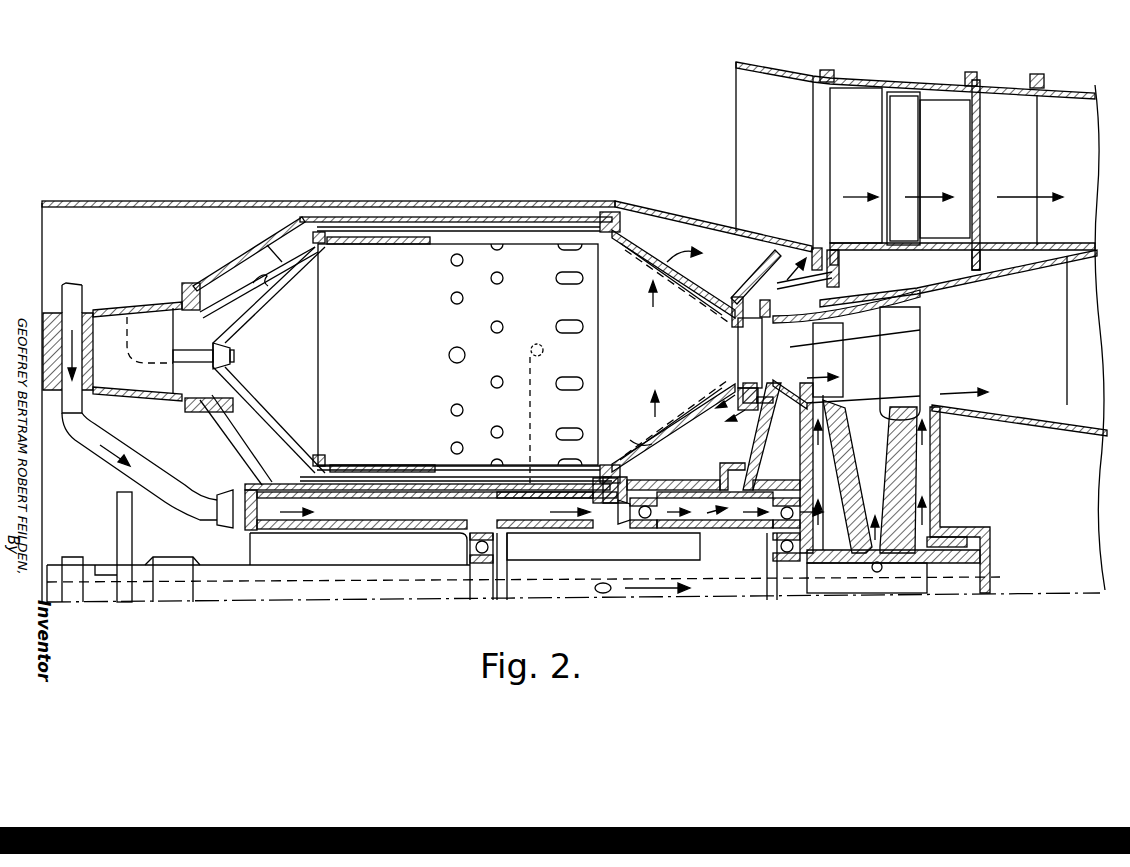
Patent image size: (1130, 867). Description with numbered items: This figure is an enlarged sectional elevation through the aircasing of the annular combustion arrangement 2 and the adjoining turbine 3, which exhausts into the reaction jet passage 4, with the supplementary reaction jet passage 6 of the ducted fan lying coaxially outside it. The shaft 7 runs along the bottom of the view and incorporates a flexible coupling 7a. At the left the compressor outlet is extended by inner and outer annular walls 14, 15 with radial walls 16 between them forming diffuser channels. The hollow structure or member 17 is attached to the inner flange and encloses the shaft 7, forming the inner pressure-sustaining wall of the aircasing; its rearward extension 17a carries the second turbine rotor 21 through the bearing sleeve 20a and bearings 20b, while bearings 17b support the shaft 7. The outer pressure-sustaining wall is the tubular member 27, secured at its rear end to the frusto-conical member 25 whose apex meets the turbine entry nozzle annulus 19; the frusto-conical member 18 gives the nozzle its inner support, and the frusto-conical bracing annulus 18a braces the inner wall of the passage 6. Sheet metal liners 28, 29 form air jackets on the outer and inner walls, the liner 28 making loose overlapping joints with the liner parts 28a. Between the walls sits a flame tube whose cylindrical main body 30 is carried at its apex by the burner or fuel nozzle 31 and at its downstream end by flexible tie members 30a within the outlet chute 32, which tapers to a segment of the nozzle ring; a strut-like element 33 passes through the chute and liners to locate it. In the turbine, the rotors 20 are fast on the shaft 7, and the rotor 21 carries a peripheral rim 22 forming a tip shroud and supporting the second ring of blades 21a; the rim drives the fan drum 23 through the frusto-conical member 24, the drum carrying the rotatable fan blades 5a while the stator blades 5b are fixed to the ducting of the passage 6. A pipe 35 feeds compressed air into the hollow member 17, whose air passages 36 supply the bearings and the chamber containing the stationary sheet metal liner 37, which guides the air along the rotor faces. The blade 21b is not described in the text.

The annular combustion arrangement 2 is at (562, 193).
The turbine 3 is at (880, 485).
The reaction jet passage 4 is at (1094, 413).
The rotatable fan blades 5a is at (845, 100).
The fan stator blades 5b is at (742, 105).
The supplementary reaction jet passage 6 is at (1075, 163).
The shaft 7 is at (518, 592).
The flexible coupling 7a is at (128, 595).
The inner annular wall 14 is at (152, 400).
The outer annular wall 15 is at (137, 305).
The radial diffuser wall 16 is at (175, 340).
The hollow structure or member 17 is at (213, 433).
The rearward extension 17a is at (702, 560).
The shaft bearings 17b is at (480, 540).
The frusto-conical member 18 is at (687, 420).
The frusto-conical bracing annulus 18a is at (766, 272).
The turbine entry nozzle annulus 19 is at (743, 343).
The bladed rotors 20 is at (840, 463).
The bearing sleeve 20a is at (677, 497).
The bearings 20b is at (807, 507).
The bladed rotor 21 is at (793, 484).
The second ring of blades 21a is at (863, 365).
The turbine blade 21b is at (920, 330).
The peripheral rim 22 is at (877, 298).
The fan drum 23 is at (958, 278).
The frusto-conical member 24 is at (788, 330).
The frusto-conical member 25 is at (763, 283).
The tubular member 27 is at (435, 227).
The sheet metal liner 28 is at (485, 217).
The liner parts 28a is at (228, 287).
The sheet metal liner 29 is at (263, 433).
The flame tube main body 30 is at (378, 255).
The flexible tie members 30a is at (531, 412).
The burner or fuel nozzle 31 is at (235, 356).
The outlet chute 32 is at (723, 365).
The strut-like element 33 is at (662, 390).
The pipe 35 is at (110, 452).
The air passages 36 is at (360, 512).
The stationary sheet metal liner 37 is at (757, 443).